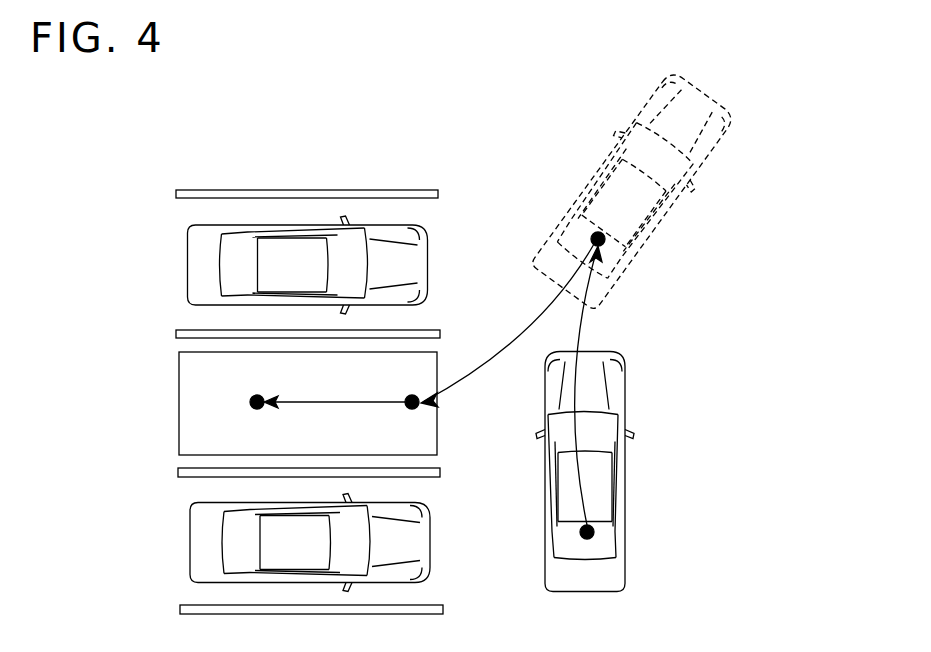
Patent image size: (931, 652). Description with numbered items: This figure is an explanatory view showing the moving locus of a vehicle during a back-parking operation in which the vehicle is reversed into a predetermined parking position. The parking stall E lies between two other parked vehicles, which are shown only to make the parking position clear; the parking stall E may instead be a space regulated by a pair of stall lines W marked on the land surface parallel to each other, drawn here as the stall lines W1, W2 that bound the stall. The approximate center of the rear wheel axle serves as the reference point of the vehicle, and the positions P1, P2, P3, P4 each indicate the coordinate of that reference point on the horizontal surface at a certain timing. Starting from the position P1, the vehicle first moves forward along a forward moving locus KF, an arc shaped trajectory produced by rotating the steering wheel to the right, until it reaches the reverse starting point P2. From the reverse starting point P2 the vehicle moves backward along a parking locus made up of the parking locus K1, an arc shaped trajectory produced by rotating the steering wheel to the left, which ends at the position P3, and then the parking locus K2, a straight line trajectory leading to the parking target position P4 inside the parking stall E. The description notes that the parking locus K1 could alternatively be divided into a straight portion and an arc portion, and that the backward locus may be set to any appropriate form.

The parking stall E is at (179, 404).
The stall lines W is at (315, 191).
The stall line W1 is at (193, 478).
The stall line W2 is at (247, 334).
The parking locus K1 is at (538, 322).
The parking locus K2 is at (290, 403).
The forward moving locus KF is at (583, 325).
The position of the reference point P1 is at (592, 527).
The reverse starting point P2 is at (603, 245).
The position of the reference point P3 is at (417, 405).
The parking target position P4 is at (250, 402).